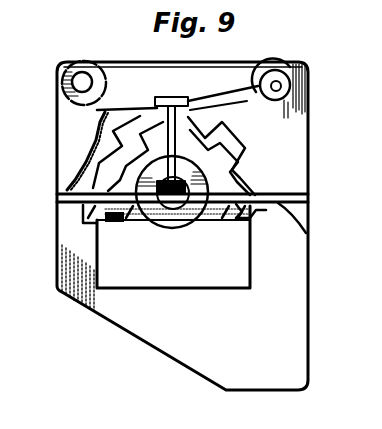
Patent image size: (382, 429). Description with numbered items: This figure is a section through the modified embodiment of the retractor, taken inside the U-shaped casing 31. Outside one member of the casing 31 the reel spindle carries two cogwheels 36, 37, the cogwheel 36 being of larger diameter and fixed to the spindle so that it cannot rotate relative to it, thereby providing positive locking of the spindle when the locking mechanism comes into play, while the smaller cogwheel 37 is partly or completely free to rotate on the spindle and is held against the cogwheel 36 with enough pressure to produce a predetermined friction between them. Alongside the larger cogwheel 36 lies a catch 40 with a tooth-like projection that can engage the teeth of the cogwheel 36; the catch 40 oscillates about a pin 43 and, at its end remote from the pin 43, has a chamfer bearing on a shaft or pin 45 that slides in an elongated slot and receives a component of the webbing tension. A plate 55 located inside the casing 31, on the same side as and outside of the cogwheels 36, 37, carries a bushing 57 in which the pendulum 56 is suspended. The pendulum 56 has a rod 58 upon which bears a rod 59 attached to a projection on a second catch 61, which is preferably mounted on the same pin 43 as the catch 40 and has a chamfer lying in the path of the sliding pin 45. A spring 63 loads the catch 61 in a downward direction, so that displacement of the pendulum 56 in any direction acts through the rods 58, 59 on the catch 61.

The casing 31 is at (158, 333).
The cogwheel 36 is at (257, 183).
The cogwheel 37 is at (310, 197).
The catch 40 is at (266, 118).
The pin 43 is at (88, 72).
The pin 45 is at (311, 82).
The plate 55 is at (306, 234).
The pendulum 56 is at (225, 275).
The bushing 57 is at (193, 220).
The rod 58 is at (163, 153).
The rod 59 is at (158, 100).
The catch 61 is at (214, 72).
The spring 63 is at (105, 113).